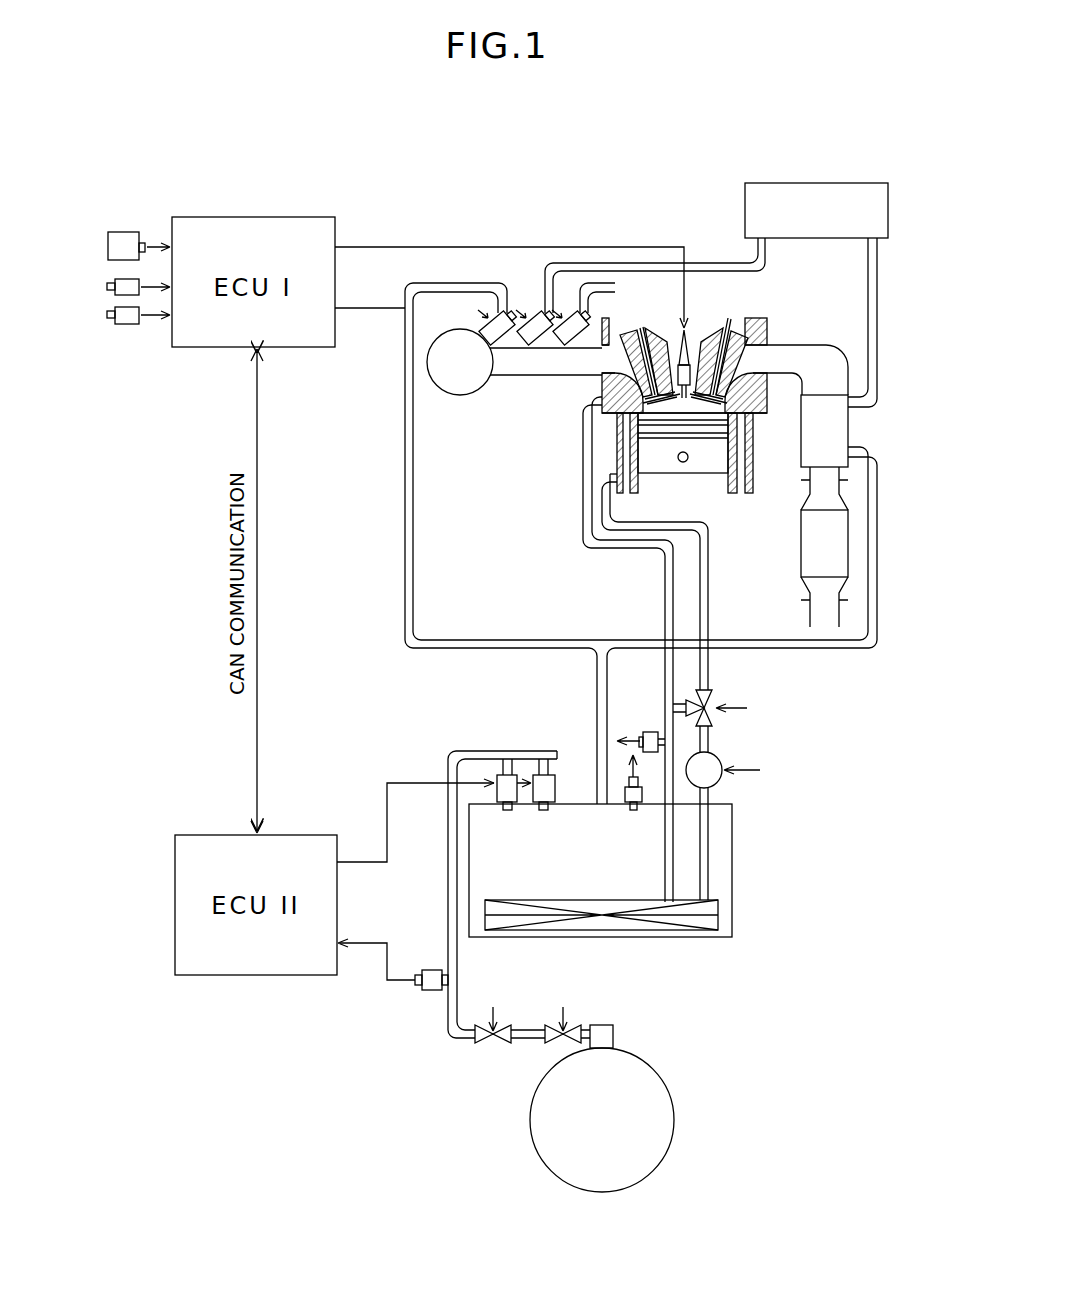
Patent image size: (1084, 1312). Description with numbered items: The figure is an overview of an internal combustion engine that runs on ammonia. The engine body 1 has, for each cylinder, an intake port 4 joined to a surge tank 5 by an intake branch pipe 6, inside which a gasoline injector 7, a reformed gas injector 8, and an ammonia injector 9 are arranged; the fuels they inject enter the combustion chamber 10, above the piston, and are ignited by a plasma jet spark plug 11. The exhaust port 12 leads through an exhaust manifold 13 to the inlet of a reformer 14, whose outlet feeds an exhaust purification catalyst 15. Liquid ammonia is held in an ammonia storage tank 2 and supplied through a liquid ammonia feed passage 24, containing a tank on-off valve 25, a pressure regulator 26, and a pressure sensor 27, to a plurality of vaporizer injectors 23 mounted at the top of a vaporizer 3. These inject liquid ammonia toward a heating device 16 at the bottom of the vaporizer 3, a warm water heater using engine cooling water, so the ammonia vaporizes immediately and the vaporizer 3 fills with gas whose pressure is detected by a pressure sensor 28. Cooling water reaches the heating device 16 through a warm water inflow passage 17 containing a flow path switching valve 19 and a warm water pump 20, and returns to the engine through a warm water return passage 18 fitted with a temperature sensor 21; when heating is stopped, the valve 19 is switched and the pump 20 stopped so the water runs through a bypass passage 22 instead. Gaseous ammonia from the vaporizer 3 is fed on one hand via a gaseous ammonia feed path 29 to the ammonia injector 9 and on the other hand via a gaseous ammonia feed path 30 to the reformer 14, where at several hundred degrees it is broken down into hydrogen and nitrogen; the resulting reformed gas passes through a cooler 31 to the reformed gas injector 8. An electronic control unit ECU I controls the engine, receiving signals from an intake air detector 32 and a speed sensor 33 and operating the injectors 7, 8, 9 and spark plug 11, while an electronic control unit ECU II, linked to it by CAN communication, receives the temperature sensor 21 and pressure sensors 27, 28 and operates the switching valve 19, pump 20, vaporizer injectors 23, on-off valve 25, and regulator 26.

The engine body 1 is at (711, 393).
The ammonia storage tank 2 is at (672, 1088).
The vaporizer 3 is at (732, 866).
The intake port 4 is at (620, 360).
The surge tank 5 is at (463, 380).
The intake branch pipe 6 is at (545, 372).
The gasoline injector 7 is at (569, 312).
The reformed gas injector 8 is at (533, 312).
The ammonia injector 9 is at (495, 312).
The combustion chamber 10 is at (690, 415).
The plasma jet spark plug 11 is at (692, 372).
The exhaust port 12 is at (750, 345).
The exhaust manifold 13 is at (808, 345).
The reformer 14 is at (840, 434).
The exhaust purification catalyst 15 is at (818, 548).
The heating device 16 is at (610, 920).
The warm water inflow passage 17 is at (710, 832).
The warm water return passage 18 is at (665, 850).
The flow path switching valve 19 is at (714, 700).
The warm water pump 20 is at (725, 760).
The temperature sensor 21 is at (646, 734).
The bypass passage 22 is at (684, 704).
The vaporizer injectors 23 is at (545, 775).
The liquid ammonia feed passage 24 is at (450, 880).
The tank on-off valve 25 is at (555, 1045).
The pressure regulator 26 is at (485, 1045).
The pressure sensor 27 is at (432, 990).
The pressure sensor 28 is at (626, 792).
The gaseous ammonia feed path 29 is at (405, 546).
The gaseous ammonia feed path 30 is at (872, 650).
The cooler 31 is at (790, 200).
The intake air detector 32 is at (123, 243).
The speed sensor 33 is at (120, 285).